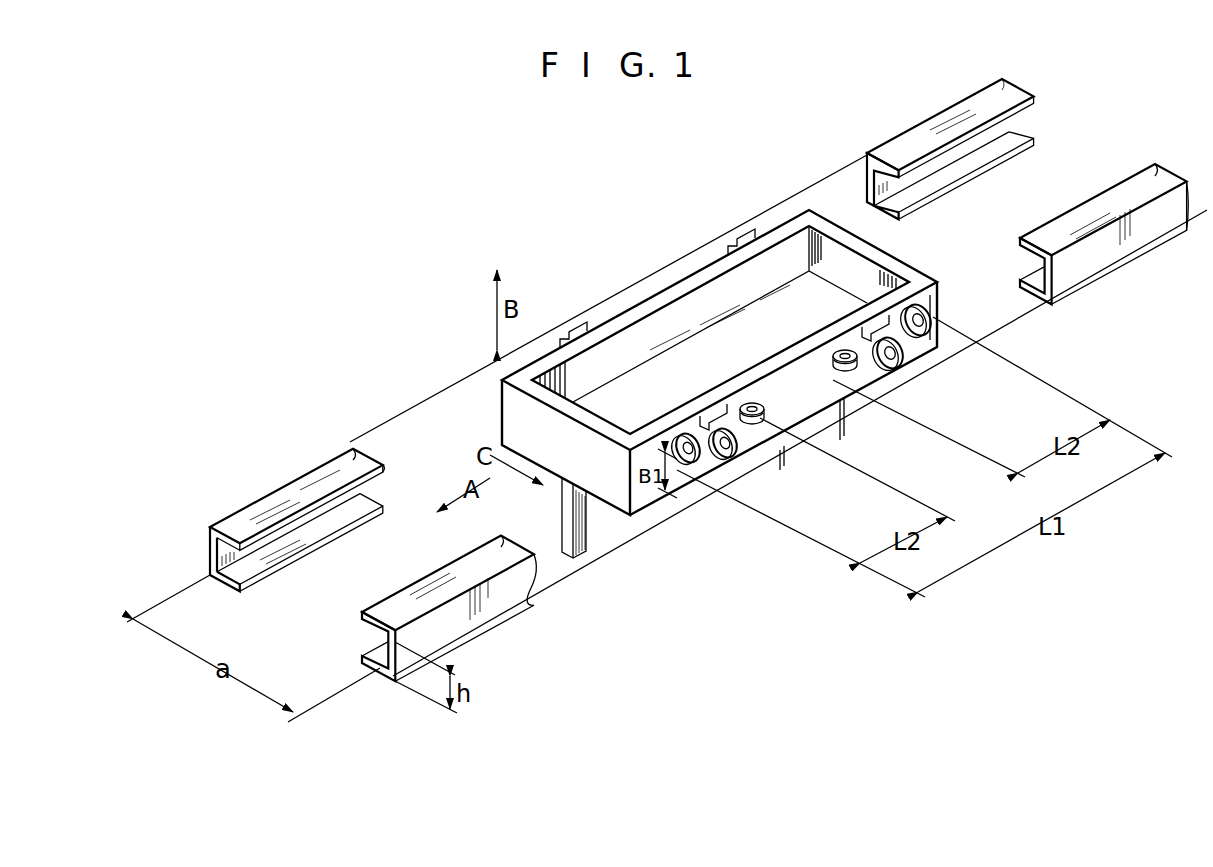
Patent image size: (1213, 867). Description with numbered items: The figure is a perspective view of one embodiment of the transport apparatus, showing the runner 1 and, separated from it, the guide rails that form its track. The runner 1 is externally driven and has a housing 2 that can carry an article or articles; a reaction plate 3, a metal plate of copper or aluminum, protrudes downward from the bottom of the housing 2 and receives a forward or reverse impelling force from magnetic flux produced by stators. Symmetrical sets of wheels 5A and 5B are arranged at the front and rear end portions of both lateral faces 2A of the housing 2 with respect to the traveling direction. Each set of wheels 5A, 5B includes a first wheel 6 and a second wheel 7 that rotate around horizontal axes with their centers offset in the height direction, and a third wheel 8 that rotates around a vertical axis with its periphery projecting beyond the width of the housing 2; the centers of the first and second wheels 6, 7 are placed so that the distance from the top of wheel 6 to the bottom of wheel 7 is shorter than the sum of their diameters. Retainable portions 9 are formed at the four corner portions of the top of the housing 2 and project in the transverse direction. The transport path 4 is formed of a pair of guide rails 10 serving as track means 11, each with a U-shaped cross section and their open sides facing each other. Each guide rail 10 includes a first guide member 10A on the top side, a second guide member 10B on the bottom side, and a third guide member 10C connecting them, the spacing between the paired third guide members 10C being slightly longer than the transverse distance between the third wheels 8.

The runner 1 is at (648, 288).
The housing 2 is at (627, 333).
The lateral faces 2A is at (835, 402).
The reaction plate 3 is at (578, 540).
The transport path 4 is at (1087, 165).
The set of wheels 5A is at (722, 466).
The set of wheels 5B is at (920, 345).
The first wheel 6 is at (933, 318).
The second wheel 7 is at (893, 366).
The third wheel 8 is at (765, 412).
The retainable portions 9 is at (745, 236).
The guide rail 10 is at (903, 138).
The first guide member 10A is at (212, 534).
The second guide member 10B is at (245, 582).
The third guide member 10C is at (212, 554).
The track means 11 is at (983, 82).